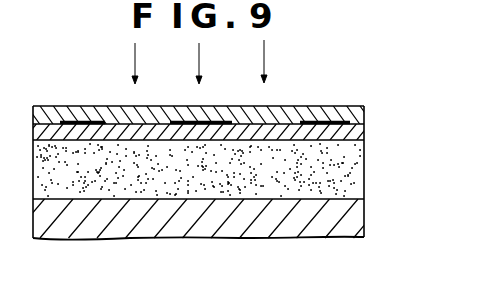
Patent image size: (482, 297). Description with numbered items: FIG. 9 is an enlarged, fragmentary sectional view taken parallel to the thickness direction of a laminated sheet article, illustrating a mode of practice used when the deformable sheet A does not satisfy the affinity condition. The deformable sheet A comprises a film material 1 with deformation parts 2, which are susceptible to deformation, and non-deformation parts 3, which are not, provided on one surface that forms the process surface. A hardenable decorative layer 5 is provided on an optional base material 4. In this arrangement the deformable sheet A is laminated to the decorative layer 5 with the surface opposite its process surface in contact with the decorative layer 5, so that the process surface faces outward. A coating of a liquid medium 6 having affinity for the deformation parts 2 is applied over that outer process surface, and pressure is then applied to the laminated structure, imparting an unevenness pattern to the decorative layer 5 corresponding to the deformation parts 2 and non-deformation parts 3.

The film material 1 is at (48, 142).
The deformation parts 2 is at (248, 107).
The non-deformation parts 3 is at (76, 120).
The base material 4 is at (182, 233).
The decorative layer 5 is at (360, 180).
The liquid medium 6 is at (315, 120).
The deformable sheet A is at (370, 120).